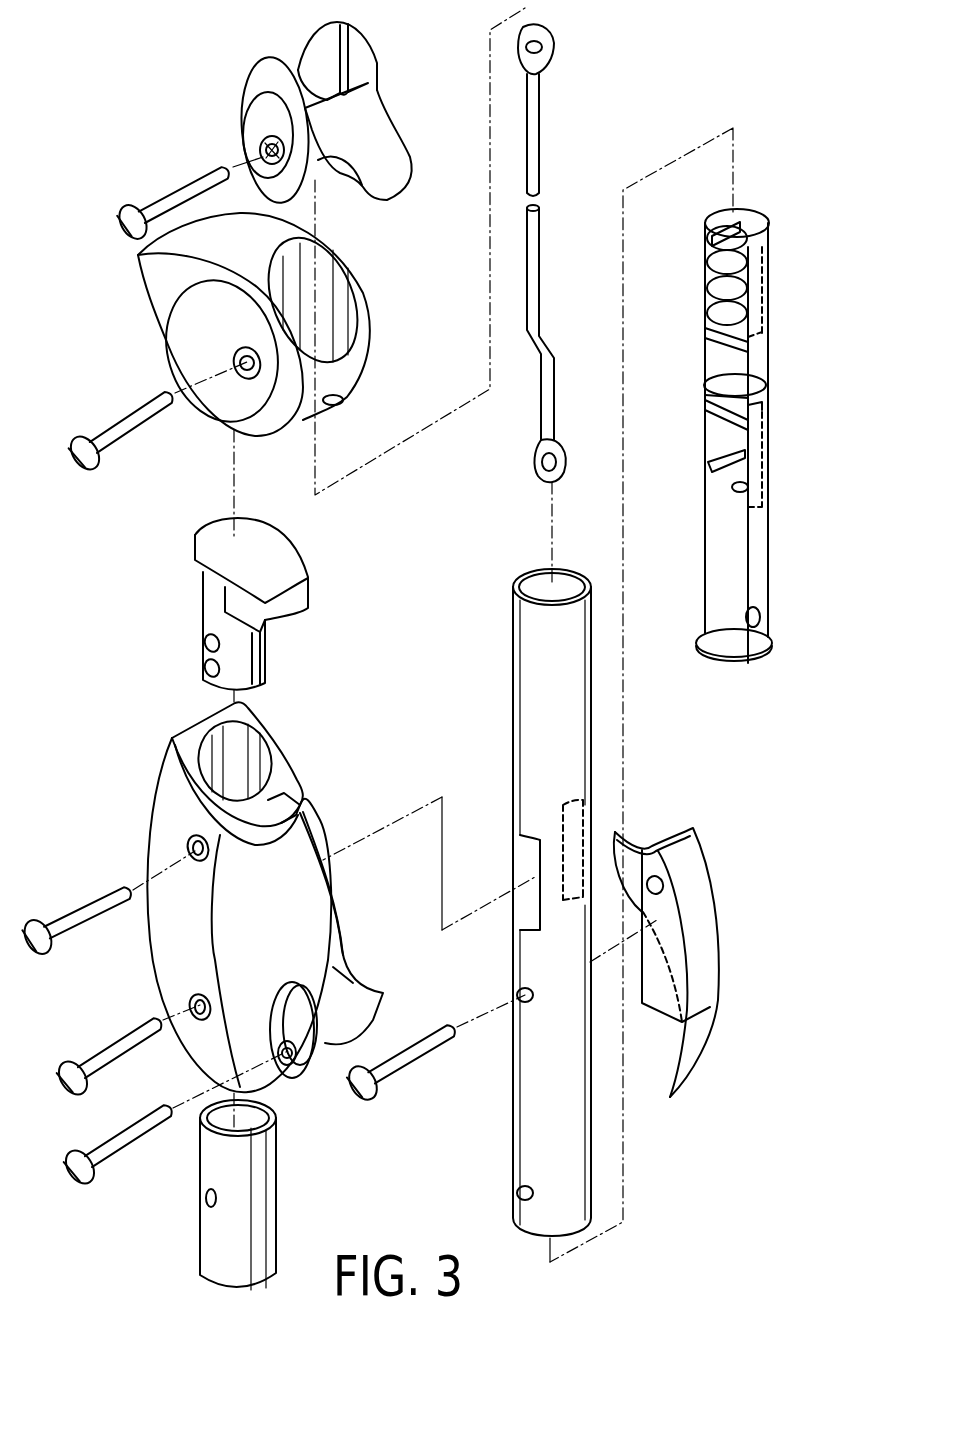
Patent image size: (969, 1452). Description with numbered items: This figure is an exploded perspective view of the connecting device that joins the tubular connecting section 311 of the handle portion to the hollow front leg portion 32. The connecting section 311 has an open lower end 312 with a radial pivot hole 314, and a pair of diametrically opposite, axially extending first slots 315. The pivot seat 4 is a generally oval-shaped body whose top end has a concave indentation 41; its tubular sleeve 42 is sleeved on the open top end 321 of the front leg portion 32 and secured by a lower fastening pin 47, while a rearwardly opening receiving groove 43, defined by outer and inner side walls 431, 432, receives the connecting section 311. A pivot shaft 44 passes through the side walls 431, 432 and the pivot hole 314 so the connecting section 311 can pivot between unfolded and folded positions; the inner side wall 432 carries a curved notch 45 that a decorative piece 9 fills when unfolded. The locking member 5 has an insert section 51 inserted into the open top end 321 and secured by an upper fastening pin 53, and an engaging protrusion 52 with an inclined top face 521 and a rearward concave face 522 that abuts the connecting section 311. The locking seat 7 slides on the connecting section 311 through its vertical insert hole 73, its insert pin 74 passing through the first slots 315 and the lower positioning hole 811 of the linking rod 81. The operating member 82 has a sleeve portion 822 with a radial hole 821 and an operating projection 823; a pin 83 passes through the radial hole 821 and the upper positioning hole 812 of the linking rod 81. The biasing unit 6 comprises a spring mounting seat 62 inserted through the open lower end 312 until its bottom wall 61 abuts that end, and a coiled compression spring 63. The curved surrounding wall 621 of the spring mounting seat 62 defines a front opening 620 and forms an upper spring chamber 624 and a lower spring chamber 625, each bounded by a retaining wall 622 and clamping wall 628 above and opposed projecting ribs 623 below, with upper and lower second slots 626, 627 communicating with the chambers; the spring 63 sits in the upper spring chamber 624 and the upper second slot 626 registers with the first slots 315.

The pivot seat 4 is at (300, 897).
The concave indentation 41 is at (280, 778).
The tubular sleeve 42 is at (243, 780).
The receiving groove 43 is at (348, 980).
The outer side wall 431 is at (305, 935).
The inner side wall 432 is at (360, 1003).
The pivot shaft 44 is at (145, 1138).
The curved notch 45 is at (295, 803).
The lower fastening pin 47 is at (117, 1052).
The locking member 5 is at (248, 612).
The insert section 51 is at (248, 673).
The engaging protrusion 52 is at (203, 555).
The inclined top face 521 is at (228, 552).
The concave face 522 is at (292, 605).
The upper fastening pin 53 is at (72, 910).
The biasing unit 6 is at (744, 454).
The bottom wall 61 is at (715, 675).
The spring mounting seat 62 is at (760, 508).
The front opening 620 is at (715, 577).
The surrounding wall 621 is at (758, 573).
The retaining wall 622 is at (755, 218).
The projecting ribs 623 is at (715, 330).
The upper spring chamber 624 is at (710, 272).
The lower spring chamber 625 is at (710, 428).
The upper second slot 626 is at (757, 303).
The lower second slot 627 is at (760, 468).
The clamping wall 628 is at (712, 243).
The coiled compression spring 63 is at (712, 262).
The locking seat 7 is at (249, 344).
The vertical insert hole 73 is at (328, 321).
The insert pin 74 is at (132, 420).
The linking rod 81 is at (573, 241).
The lower positioning hole 811 is at (560, 452).
The upper positioning hole 812 is at (540, 33).
The operating member 82 is at (323, 104).
The radial hole 821 is at (265, 150).
The sleeve portion 822 is at (318, 70).
The operating projection 823 is at (365, 148).
The pin 83 is at (182, 197).
The decorative piece 9 is at (708, 900).
The connecting section 311 is at (565, 906).
The open lower end 312 is at (590, 1213).
The pivot hole 314 is at (520, 1200).
The first slots 315 is at (525, 860).
The front leg portion 32 is at (272, 1186).
The open top end 321 is at (255, 1122).